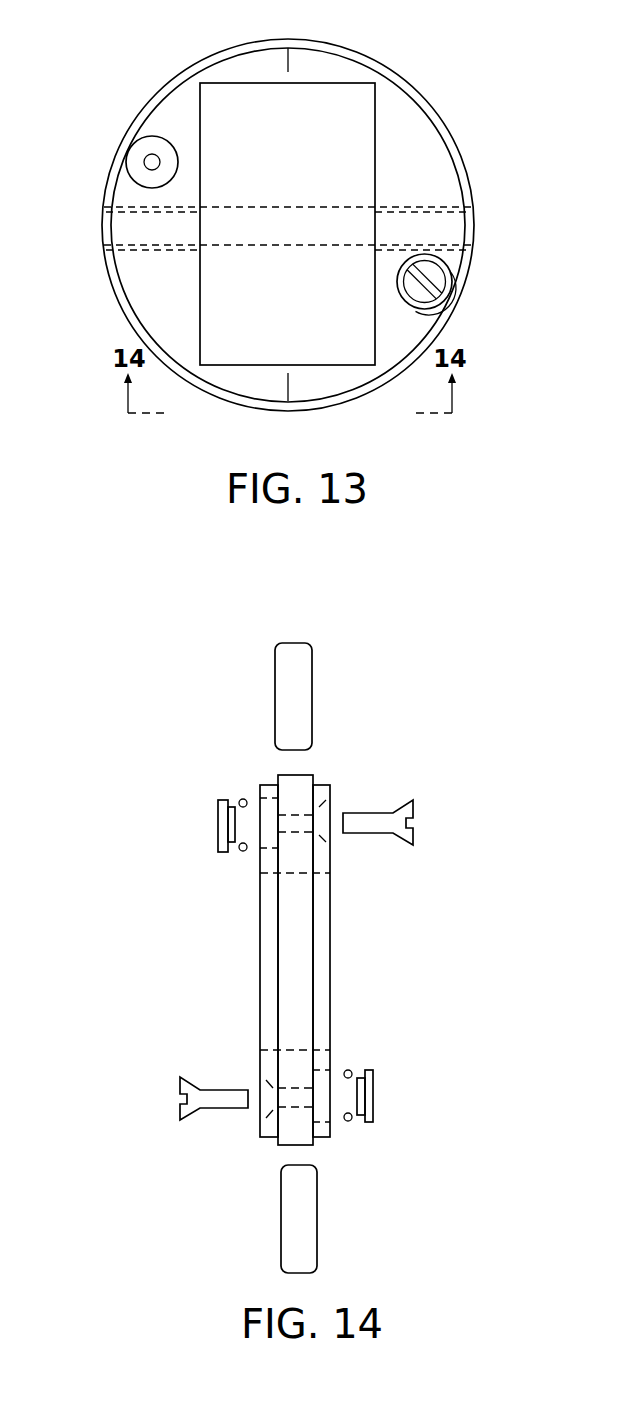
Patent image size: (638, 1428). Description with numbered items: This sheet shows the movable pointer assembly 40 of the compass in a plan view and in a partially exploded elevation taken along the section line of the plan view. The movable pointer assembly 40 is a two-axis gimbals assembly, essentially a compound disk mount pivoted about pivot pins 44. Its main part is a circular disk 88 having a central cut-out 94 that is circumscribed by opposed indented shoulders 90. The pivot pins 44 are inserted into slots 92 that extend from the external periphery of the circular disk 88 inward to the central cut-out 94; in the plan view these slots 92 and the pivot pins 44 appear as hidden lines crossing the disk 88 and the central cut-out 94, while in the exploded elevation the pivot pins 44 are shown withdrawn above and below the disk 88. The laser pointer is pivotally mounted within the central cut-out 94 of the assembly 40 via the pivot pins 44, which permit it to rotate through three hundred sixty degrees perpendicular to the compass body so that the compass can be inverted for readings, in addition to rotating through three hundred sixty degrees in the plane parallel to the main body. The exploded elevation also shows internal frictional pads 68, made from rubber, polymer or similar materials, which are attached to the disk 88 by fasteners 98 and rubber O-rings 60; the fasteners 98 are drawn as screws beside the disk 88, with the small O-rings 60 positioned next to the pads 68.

In FIG. 13, the movable pointer assembly 40 is at (424, 79).
In FIG. 14, the movable pointer assembly 40 is at (225, 889).
In FIG. 13, the pivot pins 44 is at (110, 224).
In FIG. 14, the pivot pins 44 is at (312, 699).
In FIG. 14, the rubber O-rings 60 is at (243, 798).
In FIG. 13, the internal frictional pads 68 is at (137, 152).
In FIG. 14, the internal frictional pads 68 is at (218, 808).
In FIG. 13, the circular disk 88 is at (447, 128).
In FIG. 14, the circular disk 88 is at (313, 775).
In FIG. 13, the indented shoulders 90 is at (337, 393).
In FIG. 14, the indented shoulders 90 is at (270, 1137).
In FIG. 13, the slots 92 is at (112, 206).
In FIG. 13, the central cut-out 94 is at (245, 365).
In FIG. 14, the central cut-out 94 is at (293, 873).
In FIG. 13, the fasteners 98 is at (453, 273).
In FIG. 14, the fasteners 98 is at (380, 833).